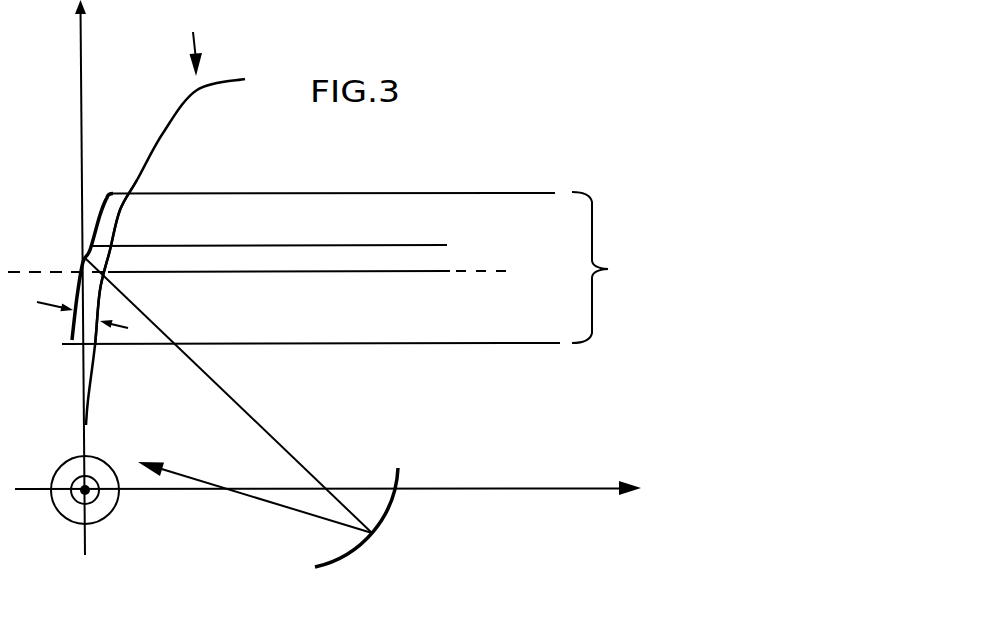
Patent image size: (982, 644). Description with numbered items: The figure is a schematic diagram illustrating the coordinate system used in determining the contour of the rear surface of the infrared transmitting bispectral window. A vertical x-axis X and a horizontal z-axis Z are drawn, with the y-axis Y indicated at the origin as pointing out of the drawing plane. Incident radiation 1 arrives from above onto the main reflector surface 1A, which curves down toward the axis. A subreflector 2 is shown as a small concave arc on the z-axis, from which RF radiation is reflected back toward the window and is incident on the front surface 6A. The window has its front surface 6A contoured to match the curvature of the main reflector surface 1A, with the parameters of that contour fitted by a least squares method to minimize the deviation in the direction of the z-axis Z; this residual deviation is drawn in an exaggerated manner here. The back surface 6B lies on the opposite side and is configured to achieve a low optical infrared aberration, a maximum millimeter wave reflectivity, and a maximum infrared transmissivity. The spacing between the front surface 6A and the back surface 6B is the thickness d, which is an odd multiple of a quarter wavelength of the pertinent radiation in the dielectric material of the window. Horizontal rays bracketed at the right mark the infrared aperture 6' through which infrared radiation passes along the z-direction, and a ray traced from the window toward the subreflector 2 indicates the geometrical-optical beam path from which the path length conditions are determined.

The main reflector 1 is at (198, 39).
The main reflector surface 1A is at (182, 110).
The subreflector 2 is at (339, 562).
The front surface 6A is at (123, 220).
The back surface 6B is at (100, 215).
The IR aperture 6' is at (430, 268).
The thickness d is at (75, 348).
The x-axis X is at (78, 25).
The y-axis Y is at (76, 503).
The z-axis Z is at (606, 490).